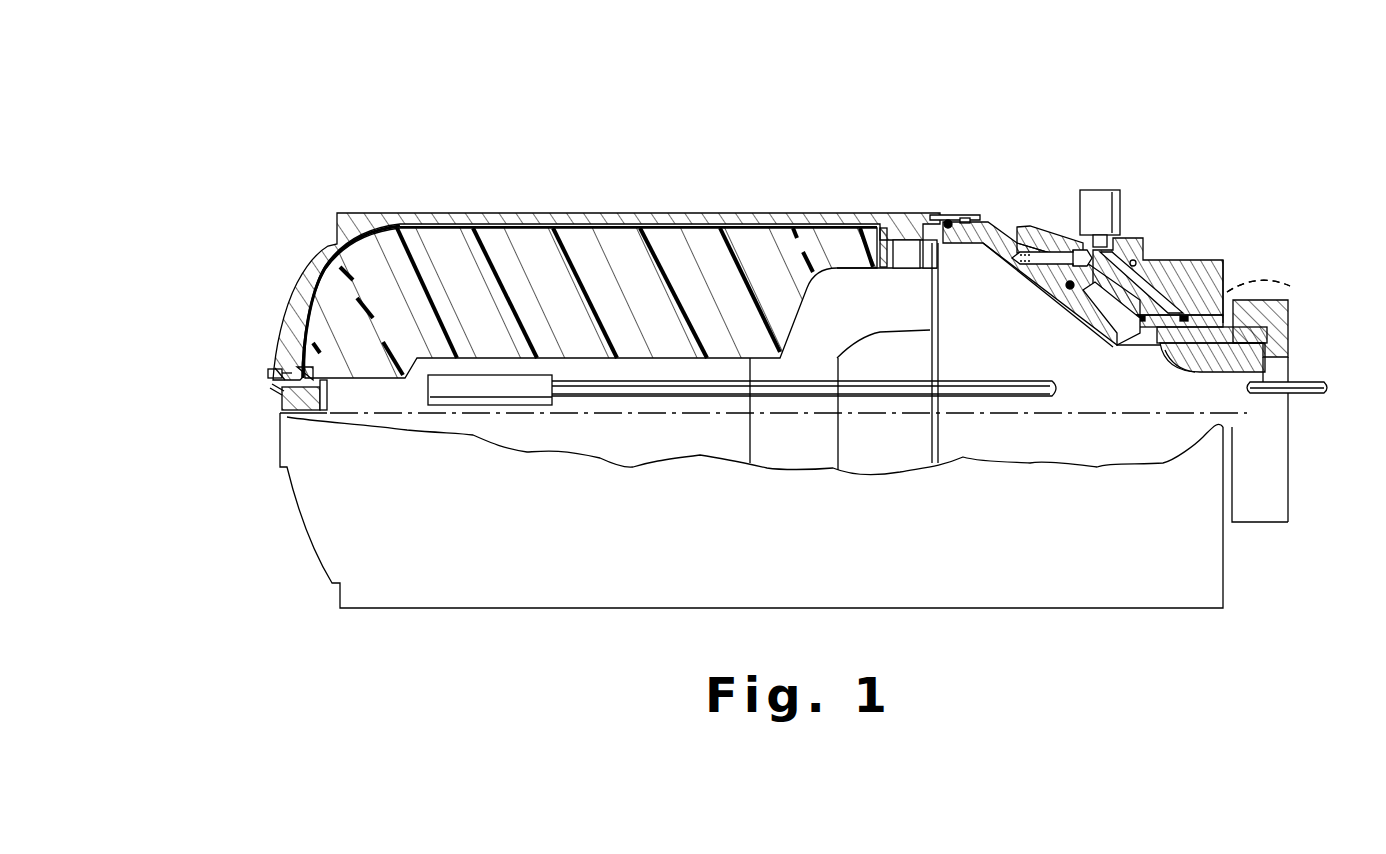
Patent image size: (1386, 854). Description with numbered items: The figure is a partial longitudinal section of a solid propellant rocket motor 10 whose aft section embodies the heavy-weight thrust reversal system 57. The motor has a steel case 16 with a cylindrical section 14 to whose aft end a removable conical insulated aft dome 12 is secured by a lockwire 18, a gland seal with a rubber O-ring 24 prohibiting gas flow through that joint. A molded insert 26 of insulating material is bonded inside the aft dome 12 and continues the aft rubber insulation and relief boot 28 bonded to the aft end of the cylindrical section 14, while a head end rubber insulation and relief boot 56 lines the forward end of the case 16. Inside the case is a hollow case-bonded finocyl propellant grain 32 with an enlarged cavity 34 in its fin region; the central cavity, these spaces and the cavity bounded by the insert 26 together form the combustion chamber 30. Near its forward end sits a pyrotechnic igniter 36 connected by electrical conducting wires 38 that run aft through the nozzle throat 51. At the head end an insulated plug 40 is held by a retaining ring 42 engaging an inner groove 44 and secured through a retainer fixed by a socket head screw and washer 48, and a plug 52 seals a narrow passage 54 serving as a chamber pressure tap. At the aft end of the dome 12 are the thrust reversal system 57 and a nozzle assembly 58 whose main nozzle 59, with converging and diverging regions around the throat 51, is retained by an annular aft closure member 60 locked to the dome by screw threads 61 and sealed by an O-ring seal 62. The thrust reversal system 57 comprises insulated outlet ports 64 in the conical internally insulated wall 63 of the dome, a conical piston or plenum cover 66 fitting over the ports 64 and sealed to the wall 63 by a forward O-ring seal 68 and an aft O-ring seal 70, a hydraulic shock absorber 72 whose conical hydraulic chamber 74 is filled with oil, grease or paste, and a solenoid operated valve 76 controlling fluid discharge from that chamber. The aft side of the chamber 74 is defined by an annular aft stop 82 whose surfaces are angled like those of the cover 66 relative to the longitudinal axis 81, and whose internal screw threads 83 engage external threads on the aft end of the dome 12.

The solid propellant rocket motor 10 is at (745, 150).
The conical insulated aft dome 12 is at (990, 222).
The cylindrical section 14 is at (945, 217).
The steel case 16 is at (445, 212).
The lockwire 18 is at (963, 220).
The O-ring 24 is at (940, 222).
The molded insert 26 is at (990, 250).
The aft rubber insulation and relief boot 28 is at (812, 232).
The combustion chamber 30 is at (980, 367).
The finocyl propellant grain configuration 32 is at (540, 255).
The enlarged cavity 34 is at (823, 230).
The pyrotechnic igniter 36 is at (508, 388).
The electrical conducting wires 38 is at (643, 380).
The insulated plug 40 is at (278, 403).
The retaining ring 42 is at (280, 392).
The inner groove 44 is at (268, 373).
The socket head screw and washer 48 is at (272, 393).
The nozzle throat 51 is at (1177, 373).
The plug 52 is at (277, 370).
The narrow passage 54 is at (310, 367).
The head end rubber insulation and relief boot 56 is at (327, 282).
The thrust reversal system 57 is at (1185, 165).
The nozzle assembly 58 is at (1250, 270).
The main motor nozzle 59 is at (1217, 360).
The annular aft closure member 60 is at (1282, 330).
The screw threads 61 is at (1175, 350).
The O-ring seal 62 is at (1125, 337).
The conical internally insulated wall 63 is at (1050, 265).
The insulated outlet ports 64 is at (1085, 305).
The piston or plenum cover 66 is at (1030, 233).
The forward O-ring seal 68 is at (1072, 290).
The aft O-ring seal 70 is at (1110, 320).
The hydraulic shock absorber 72 is at (1168, 253).
The hydraulic chamber 74 is at (1143, 290).
The solenoid operated valve 76 is at (1100, 200).
The longitudinal axis 81 is at (712, 413).
The aft stop 82 is at (1203, 273).
The internal screw threads 83 is at (1290, 286).